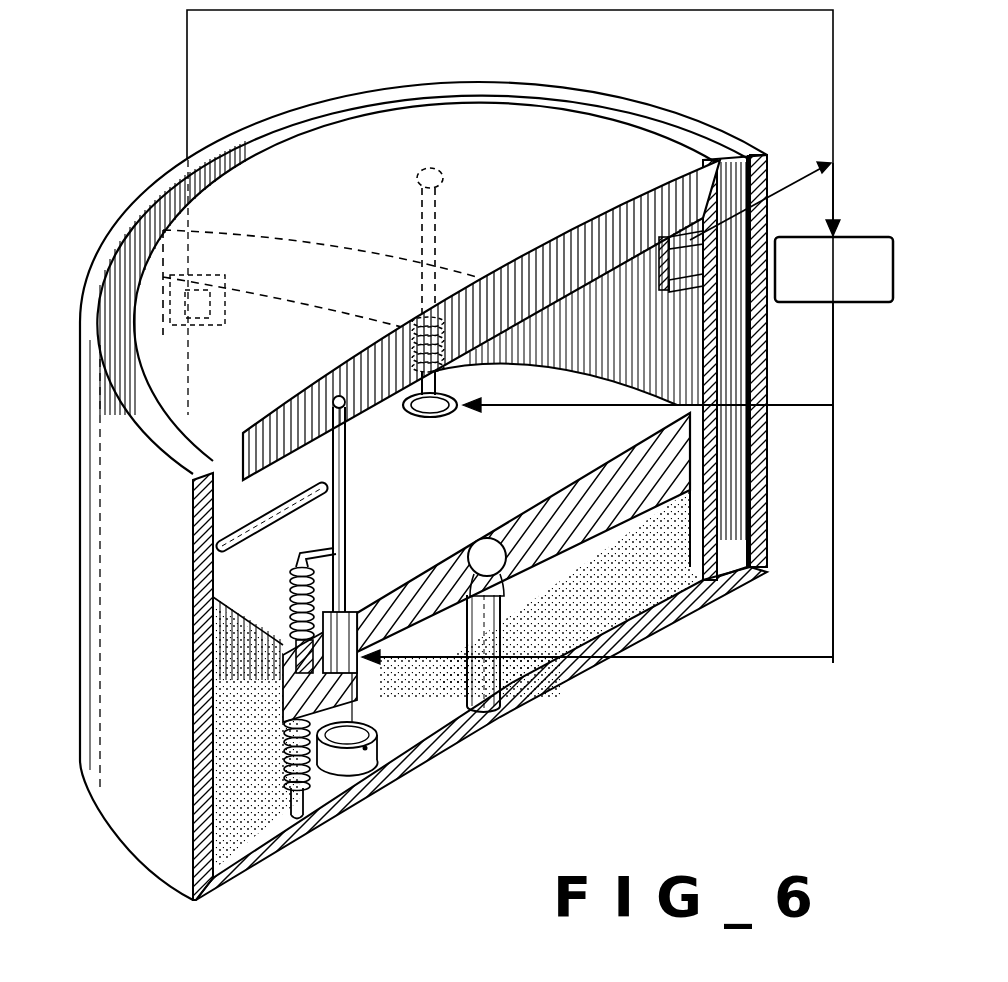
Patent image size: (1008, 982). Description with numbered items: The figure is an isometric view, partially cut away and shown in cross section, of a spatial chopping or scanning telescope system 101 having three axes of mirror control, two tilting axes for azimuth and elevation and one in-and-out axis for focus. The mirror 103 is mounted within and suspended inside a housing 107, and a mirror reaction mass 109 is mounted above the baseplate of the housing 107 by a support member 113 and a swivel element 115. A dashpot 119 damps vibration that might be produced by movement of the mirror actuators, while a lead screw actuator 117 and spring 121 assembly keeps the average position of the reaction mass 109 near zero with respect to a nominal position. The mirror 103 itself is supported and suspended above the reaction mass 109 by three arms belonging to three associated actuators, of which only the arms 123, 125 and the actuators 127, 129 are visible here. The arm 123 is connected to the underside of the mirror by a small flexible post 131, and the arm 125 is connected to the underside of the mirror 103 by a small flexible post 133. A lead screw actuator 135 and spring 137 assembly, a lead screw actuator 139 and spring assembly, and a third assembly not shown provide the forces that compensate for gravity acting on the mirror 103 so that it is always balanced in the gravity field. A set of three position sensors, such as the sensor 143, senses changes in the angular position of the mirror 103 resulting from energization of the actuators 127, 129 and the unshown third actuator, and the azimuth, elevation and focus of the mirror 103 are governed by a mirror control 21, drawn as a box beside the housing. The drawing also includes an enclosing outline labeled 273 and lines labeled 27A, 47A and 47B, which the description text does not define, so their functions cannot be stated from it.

The spatial chopping or scanning telescope system 101 is at (108, 204).
The mirror 103 is at (645, 140).
The housing 107 is at (76, 493).
The mirror reaction mass 109 is at (600, 390).
The support member 113 is at (502, 637).
The swivel element 115 is at (505, 578).
The lead screw actuator 117 is at (297, 803).
The dashpot 119 is at (367, 749).
The spring 121 is at (283, 760).
The arm 123 is at (344, 516).
The arm 125 is at (443, 225).
The actuator 127 is at (347, 608).
The actuator 129 is at (456, 402).
The small flexible post 131 is at (332, 403).
The small flexible post 133 is at (420, 196).
The lead screw actuator 135 is at (270, 648).
The spring 137 is at (290, 606).
The lead screw actuator 139 is at (409, 418).
The position sensor 143 is at (655, 294).
The mirror control 21 is at (873, 226).
The light beam 27A is at (793, 174).
The light path 47A is at (722, 666).
The light path 47B is at (800, 407).
The boundary 273 is at (532, 13).